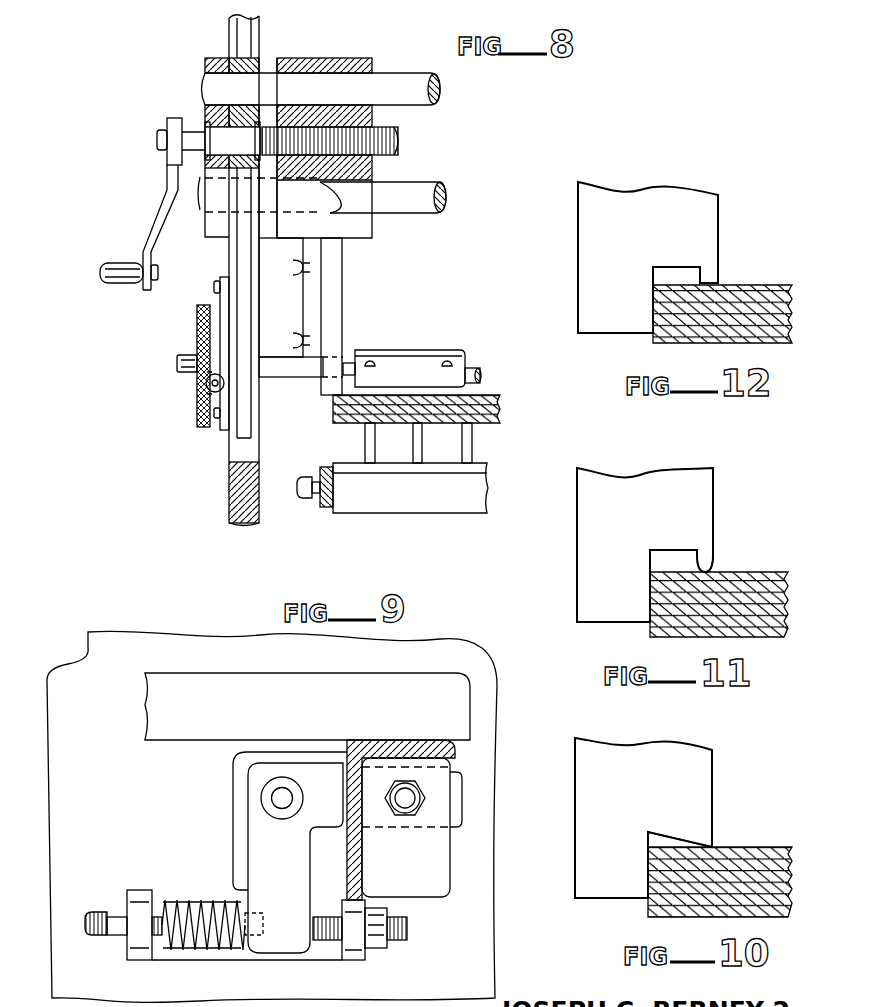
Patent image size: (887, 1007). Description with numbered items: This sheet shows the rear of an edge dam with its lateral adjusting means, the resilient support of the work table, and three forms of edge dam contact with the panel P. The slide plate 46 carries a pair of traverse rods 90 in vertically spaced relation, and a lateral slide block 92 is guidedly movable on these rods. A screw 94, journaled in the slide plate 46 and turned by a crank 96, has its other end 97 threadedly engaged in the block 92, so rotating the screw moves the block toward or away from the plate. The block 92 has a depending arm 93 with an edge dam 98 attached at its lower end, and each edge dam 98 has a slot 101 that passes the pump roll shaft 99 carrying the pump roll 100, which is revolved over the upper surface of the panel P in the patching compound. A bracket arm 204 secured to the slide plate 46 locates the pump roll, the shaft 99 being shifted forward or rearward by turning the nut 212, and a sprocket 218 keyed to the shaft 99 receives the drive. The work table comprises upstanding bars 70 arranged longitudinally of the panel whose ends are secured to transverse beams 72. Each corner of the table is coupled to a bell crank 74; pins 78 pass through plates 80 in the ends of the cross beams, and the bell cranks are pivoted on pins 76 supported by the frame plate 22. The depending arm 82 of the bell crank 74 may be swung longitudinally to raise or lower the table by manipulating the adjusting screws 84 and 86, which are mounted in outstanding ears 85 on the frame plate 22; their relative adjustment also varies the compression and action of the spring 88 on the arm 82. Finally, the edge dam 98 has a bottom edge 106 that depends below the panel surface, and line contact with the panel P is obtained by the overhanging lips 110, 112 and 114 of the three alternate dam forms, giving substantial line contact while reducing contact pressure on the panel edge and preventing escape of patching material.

In FIG. 8, the frame plate 22 is at (230, 480).
In FIG. 9, the frame plate 22 is at (117, 793).
In FIG. 8, the slide plate 46 is at (262, 58).
In FIG. 8, the upstanding bars 70 is at (372, 442).
In FIG. 9, the upstanding bars 70 is at (362, 715).
In FIG. 8, the transverse beams 72 is at (438, 503).
In FIG. 9, the transverse beams 72 is at (455, 746).
In FIG. 9, the bell crank 74 is at (233, 828).
In FIG. 9, the pins 76 is at (284, 797).
In FIG. 8, the pins 78 is at (293, 495).
In FIG. 9, the pins 78 is at (406, 800).
In FIG. 9, the plates 80 is at (440, 848).
In FIG. 9, the depending arm 82 is at (285, 950).
In FIG. 9, the adjusting screw 84 is at (403, 937).
In FIG. 9, the outstanding ears 85 is at (142, 962).
In FIG. 9, the adjusting screw 86 is at (100, 912).
In FIG. 9, the spring 88 is at (200, 900).
In FIG. 8, the traverse rods 90 is at (420, 104).
In FIG. 8, the lateral slide block 92 is at (352, 60).
In FIG. 8, the depending arm 93 is at (308, 296).
In FIG. 8, the screw 94 is at (221, 141).
In FIG. 8, the crank 96 is at (168, 196).
In FIG. 8, the screw end 97 is at (398, 150).
In FIG. 8, the edge dam 98 is at (338, 310).
In FIG. 12, the edge dam 98 is at (578, 245).
In FIG. 11, the edge dam 98 is at (577, 533).
In FIG. 10, the edge dam 98 is at (575, 833).
In FIG. 8, the pump roll shaft 99 is at (475, 362).
In FIG. 8, the pump roll 100 is at (407, 355).
In FIG. 8, the slot 101 is at (335, 352).
In FIG. 12, the bottom edge 106 is at (598, 337).
In FIG. 11, the bottom edge 106 is at (585, 625).
In FIG. 10, the bottom edge 106 is at (600, 902).
In FIG. 10, the overhanging lip 110 is at (712, 835).
In FIG. 11, the overhanging lip 112 is at (713, 560).
In FIG. 12, the overhanging lip 114 is at (718, 265).
In FIG. 8, the bracket arm 204 is at (223, 302).
In FIG. 8, the nut 212 is at (205, 384).
In FIG. 8, the sprocket 218 is at (198, 315).
In FIG. 8, the panel P is at (429, 409).
In FIG. 12, the panel P is at (755, 290).
In FIG. 11, the panel P is at (745, 582).
In FIG. 10, the panel P is at (752, 850).